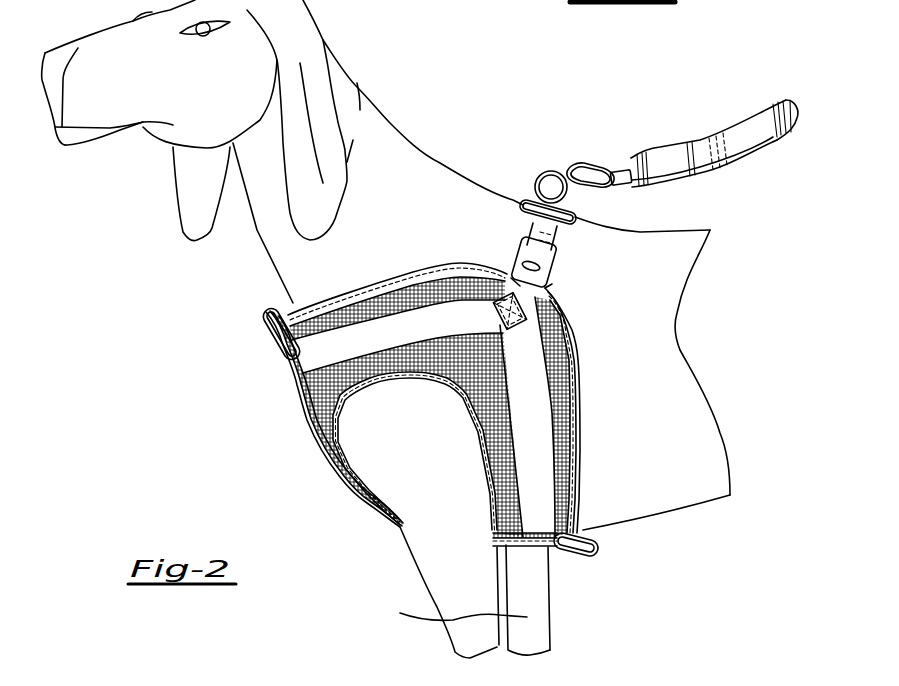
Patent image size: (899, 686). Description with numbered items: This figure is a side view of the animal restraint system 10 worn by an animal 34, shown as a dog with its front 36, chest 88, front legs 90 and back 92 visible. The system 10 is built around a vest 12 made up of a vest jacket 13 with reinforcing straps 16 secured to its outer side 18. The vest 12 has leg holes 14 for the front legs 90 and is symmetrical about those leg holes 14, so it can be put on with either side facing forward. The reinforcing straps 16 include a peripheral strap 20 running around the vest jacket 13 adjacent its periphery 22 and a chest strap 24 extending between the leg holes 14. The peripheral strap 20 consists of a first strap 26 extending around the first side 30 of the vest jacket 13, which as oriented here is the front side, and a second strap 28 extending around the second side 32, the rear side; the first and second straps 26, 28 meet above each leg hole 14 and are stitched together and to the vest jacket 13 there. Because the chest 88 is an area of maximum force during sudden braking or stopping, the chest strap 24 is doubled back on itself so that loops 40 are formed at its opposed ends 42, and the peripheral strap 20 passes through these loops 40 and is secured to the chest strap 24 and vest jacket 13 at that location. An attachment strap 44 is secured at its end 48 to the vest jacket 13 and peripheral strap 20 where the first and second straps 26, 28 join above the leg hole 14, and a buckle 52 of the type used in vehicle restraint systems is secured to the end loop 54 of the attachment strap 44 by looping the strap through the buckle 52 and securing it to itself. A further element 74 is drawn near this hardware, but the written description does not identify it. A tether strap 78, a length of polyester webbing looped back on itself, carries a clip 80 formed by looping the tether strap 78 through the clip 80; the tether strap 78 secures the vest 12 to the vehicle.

The animal restraint system 10 is at (705, 63).
The vest 12 is at (295, 431).
The vest jacket 13 is at (321, 392).
The leg holes 14 is at (362, 466).
The reinforcing straps 16 is at (562, 380).
The outer side 18 is at (487, 400).
The peripheral strap 20 is at (532, 524).
The periphery 22 is at (582, 446).
The chest strap 24 is at (337, 487).
The first strap 26 is at (416, 312).
The second strap 28 is at (527, 415).
The first side 30 is at (285, 300).
The second side 32 is at (584, 330).
The animal 34 is at (437, 163).
The front 36 is at (223, 252).
The loops 40 is at (277, 336).
The opposed ends 42 is at (241, 329).
The attachment strap 44 is at (533, 297).
The end 48 is at (527, 313).
The buckle 52 is at (507, 258).
The end loop 54 is at (503, 272).
The ring 74 is at (538, 178).
The tether strap 78 is at (660, 148).
The clip 80 is at (582, 164).
The chest 88 is at (296, 465).
The front legs 90 is at (455, 592).
The back 92 is at (603, 232).